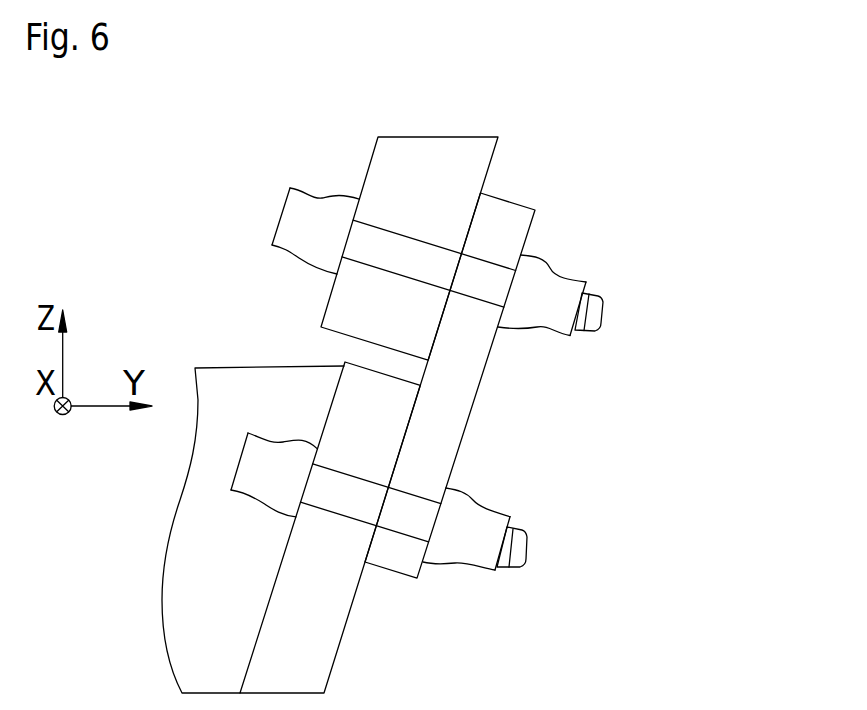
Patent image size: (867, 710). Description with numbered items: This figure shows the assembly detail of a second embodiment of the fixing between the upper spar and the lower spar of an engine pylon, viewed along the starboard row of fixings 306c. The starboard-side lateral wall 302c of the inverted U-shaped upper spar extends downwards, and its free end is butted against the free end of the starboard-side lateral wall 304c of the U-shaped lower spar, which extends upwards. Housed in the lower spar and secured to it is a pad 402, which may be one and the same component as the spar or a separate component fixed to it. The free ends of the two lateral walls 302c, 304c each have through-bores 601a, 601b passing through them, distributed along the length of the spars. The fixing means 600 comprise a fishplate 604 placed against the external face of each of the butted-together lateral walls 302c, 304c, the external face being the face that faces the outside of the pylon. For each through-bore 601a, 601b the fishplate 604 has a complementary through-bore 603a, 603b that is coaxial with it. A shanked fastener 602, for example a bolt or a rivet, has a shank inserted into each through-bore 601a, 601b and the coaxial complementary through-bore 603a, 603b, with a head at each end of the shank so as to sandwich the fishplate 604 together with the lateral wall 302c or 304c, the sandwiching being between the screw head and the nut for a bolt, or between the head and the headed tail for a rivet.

The starboard-side lateral wall of the upper spar 302c is at (482, 164).
The starboard-side lateral wall of the lower spar 304c is at (320, 674).
The row of fixings 306c is at (683, 399).
The pad 402 is at (212, 382).
The fixing means 600 is at (673, 492).
The through-bore 601a is at (397, 233).
The through-bore 601b is at (332, 513).
The shanked fastener 602 is at (568, 304).
The complementary through-bore 603a is at (495, 262).
The complementary through-bore 603b is at (408, 580).
The fishplate 604 is at (457, 400).